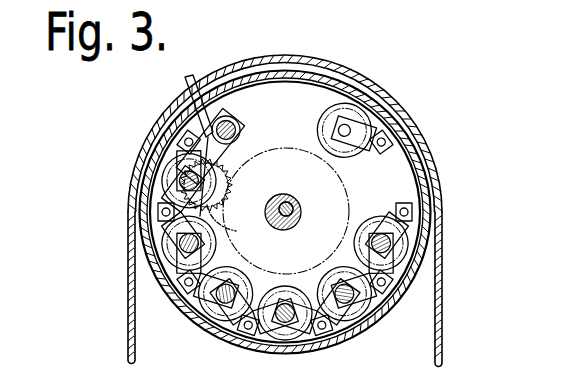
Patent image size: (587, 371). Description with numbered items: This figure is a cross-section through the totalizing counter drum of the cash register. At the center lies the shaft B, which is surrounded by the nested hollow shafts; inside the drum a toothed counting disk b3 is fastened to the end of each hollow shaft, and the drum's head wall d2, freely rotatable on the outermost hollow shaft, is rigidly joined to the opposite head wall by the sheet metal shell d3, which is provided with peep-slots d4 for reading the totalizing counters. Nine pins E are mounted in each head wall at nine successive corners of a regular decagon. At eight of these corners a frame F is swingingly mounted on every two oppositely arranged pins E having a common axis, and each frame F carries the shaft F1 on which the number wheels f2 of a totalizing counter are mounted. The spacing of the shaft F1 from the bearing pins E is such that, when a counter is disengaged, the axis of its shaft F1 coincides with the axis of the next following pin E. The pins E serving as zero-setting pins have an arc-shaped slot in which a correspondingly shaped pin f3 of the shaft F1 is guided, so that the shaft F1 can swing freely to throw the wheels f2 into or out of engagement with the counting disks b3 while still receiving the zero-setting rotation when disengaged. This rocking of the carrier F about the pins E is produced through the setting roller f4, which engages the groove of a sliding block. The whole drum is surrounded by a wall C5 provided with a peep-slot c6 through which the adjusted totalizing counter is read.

The shaft B is at (284, 226).
The toothed counting disk b3 is at (337, 178).
The pins E is at (226, 116).
The frame F is at (198, 90).
The shaft F1 is at (226, 200).
The wheels f2 is at (232, 227).
The pin f3 is at (230, 171).
The setting roller f4 is at (170, 160).
The head wall d2 is at (293, 80).
The sheet metal shell d3 is at (172, 120).
The peep-slots d4 is at (412, 163).
The peep-slot c6 is at (370, 86).
The wall C5 is at (133, 206).